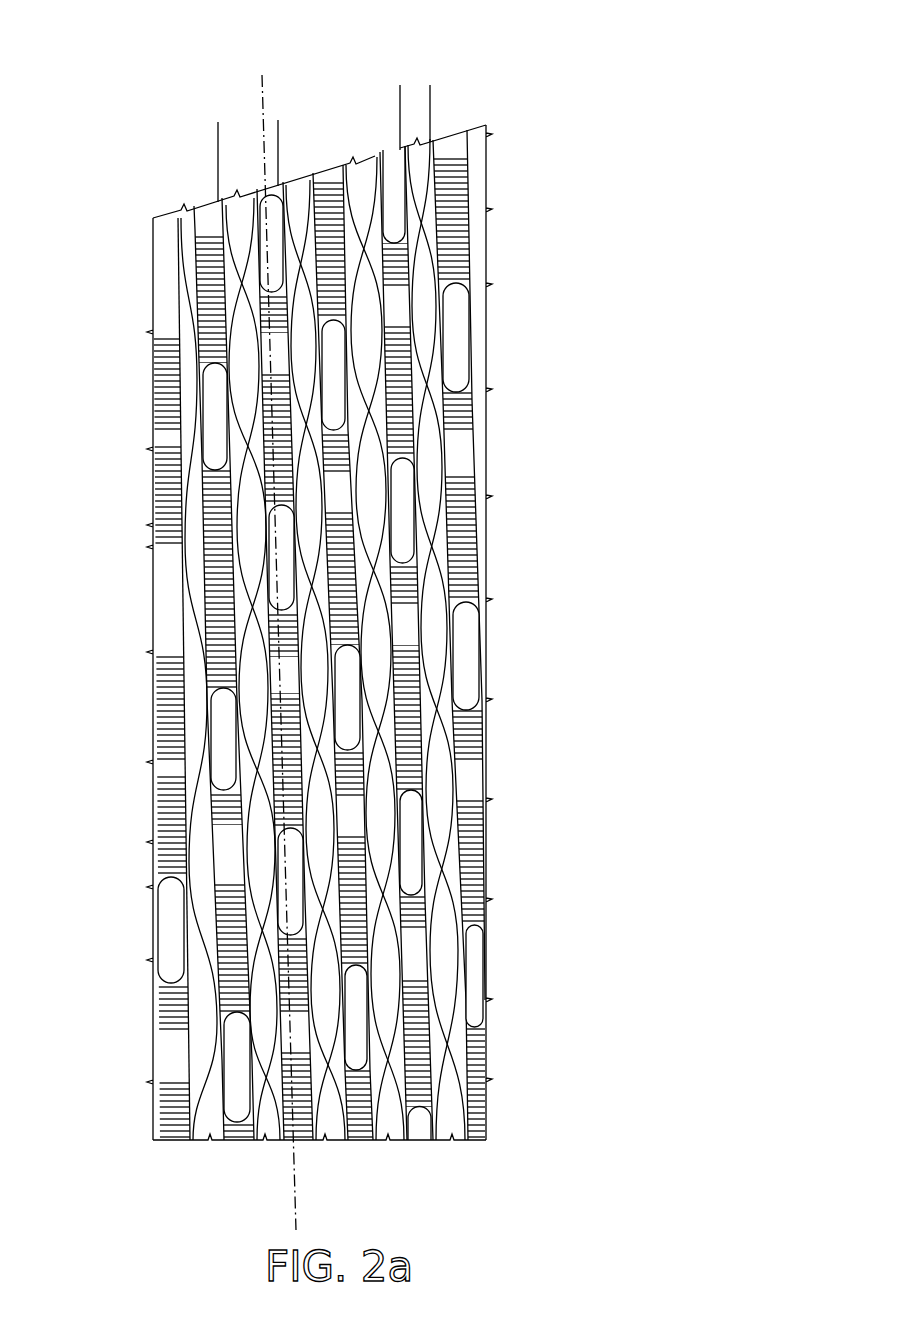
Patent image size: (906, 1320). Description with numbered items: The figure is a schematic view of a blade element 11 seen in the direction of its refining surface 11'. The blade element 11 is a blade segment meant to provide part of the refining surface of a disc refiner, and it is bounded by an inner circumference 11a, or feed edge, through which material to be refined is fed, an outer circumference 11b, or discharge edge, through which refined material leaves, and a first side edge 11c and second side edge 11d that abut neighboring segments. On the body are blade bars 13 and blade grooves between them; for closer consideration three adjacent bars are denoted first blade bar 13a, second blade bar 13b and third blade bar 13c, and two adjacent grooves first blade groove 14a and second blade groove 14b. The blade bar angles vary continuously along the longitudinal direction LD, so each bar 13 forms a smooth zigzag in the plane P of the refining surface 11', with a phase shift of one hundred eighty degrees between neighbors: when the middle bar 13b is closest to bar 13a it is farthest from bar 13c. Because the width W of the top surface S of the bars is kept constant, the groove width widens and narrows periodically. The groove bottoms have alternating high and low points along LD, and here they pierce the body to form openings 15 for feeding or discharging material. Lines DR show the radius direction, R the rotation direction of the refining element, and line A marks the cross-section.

The blade element 11 is at (122, 679).
The inner circumference 11a is at (170, 1144).
The outer circumference 11b is at (347, 152).
The first side edge 11c is at (130, 502).
The second side edge 11d is at (488, 292).
The refining surface 11' is at (476, 643).
The blade bar 13 is at (481, 1083).
The first blade bar 13a is at (265, 1143).
The second blade bar 13b is at (327, 1125).
The third blade bar 13c is at (398, 1142).
The first blade groove 14a is at (292, 1142).
The second blade groove 14b is at (361, 1125).
The opening 15 is at (474, 660).
The plane of the refining surface P is at (160, 830).
The top surface of the blade bar S is at (434, 191).
The width of the top surface W is at (368, 93).
The rotation direction R is at (490, 45).
The longitudinal direction LD is at (527, 458).
The direction of the radius DR is at (218, 158).
The section line A- A is at (287, 75).